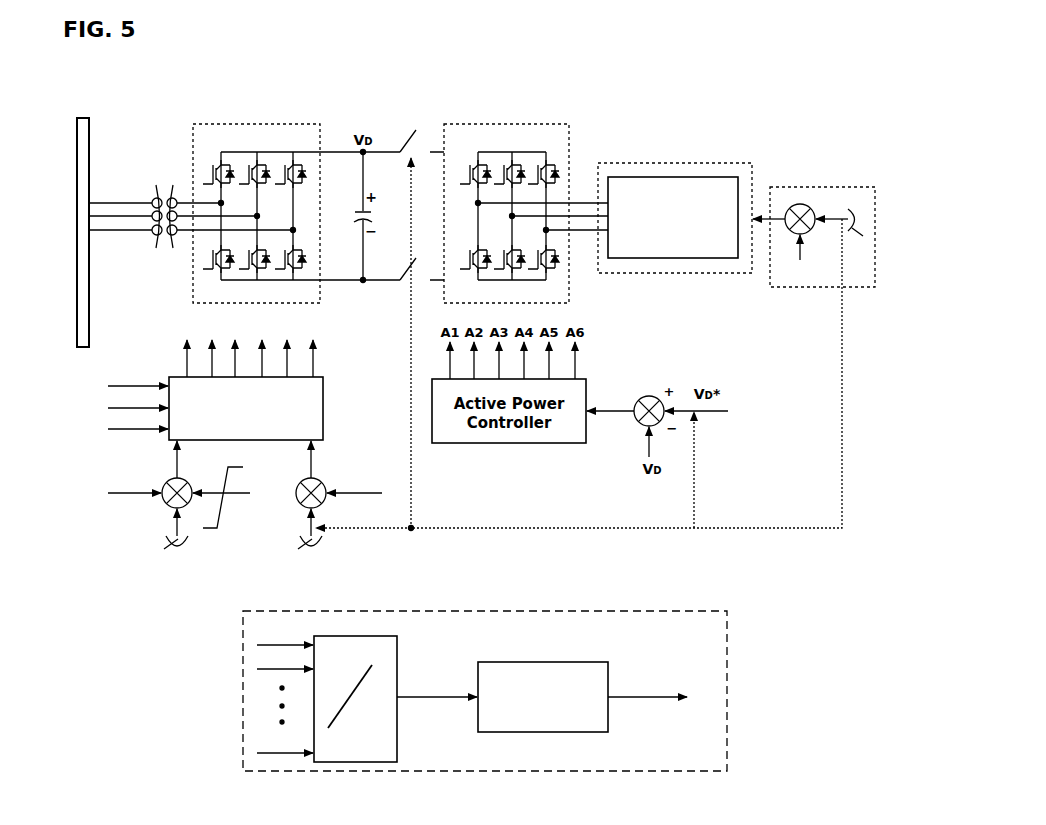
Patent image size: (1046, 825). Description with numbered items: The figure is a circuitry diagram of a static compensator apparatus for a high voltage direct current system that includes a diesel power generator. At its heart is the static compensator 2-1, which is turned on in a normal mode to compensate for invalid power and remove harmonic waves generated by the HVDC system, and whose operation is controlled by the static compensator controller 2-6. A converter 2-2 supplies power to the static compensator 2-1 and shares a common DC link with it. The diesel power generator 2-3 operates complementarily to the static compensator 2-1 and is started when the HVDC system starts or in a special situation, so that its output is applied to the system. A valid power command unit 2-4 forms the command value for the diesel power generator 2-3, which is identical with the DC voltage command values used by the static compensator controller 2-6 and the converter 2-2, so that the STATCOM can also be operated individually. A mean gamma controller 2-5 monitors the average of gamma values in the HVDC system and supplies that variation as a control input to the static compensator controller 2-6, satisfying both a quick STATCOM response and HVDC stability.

The static compensator 2-1 is at (256, 205).
The engine-side power converter 2-2 is at (526, 205).
The diesel power generator 2-3 is at (675, 196).
The active power reference summing unit 2-4 is at (814, 228).
The mean gamma controller 2-5 is at (485, 682).
The static compensator controller 2-6 is at (245, 436).